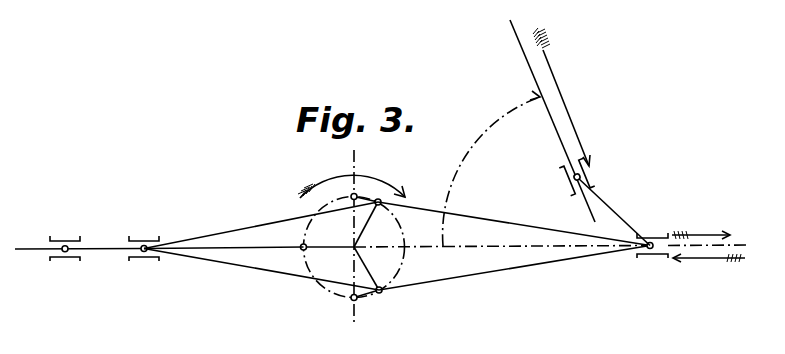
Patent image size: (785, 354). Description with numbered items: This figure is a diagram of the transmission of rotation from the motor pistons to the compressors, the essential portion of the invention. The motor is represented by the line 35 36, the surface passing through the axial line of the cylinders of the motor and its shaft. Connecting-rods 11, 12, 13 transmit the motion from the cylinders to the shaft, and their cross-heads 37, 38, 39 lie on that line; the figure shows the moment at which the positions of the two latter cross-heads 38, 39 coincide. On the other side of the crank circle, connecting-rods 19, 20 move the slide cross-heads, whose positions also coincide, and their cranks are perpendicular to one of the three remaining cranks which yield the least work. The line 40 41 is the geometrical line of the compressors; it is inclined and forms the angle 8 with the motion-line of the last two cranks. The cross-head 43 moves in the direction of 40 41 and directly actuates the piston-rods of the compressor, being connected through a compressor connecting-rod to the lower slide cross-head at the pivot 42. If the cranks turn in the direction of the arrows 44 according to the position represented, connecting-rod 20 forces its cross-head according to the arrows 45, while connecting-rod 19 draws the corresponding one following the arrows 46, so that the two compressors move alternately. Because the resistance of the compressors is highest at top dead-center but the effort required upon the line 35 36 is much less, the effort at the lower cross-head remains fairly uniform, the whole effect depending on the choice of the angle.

The angle of oscillation 8 is at (491, 168).
The connecting-rod 11 is at (265, 248).
The connecting-rod 12 is at (266, 270).
The connecting-rod 13 is at (251, 226).
The connecting-rod 19 is at (512, 267).
The connecting-rod 20 is at (508, 223).
The motor line 35 is at (79, 260).
The motor line 36 is at (711, 239).
The cross-head 37 is at (62, 246).
The cross-head 38 is at (146, 245).
The cross-head 39 is at (145, 258).
The geometrical line of the compressors 40 is at (608, 211).
The geometrical line of the compressors 41 is at (545, 115).
The bearing 42 is at (627, 224).
The cross-head 43 is at (566, 176).
The arrows 44 is at (355, 178).
The arrows 45 is at (701, 225).
The arrows 46 is at (709, 270).